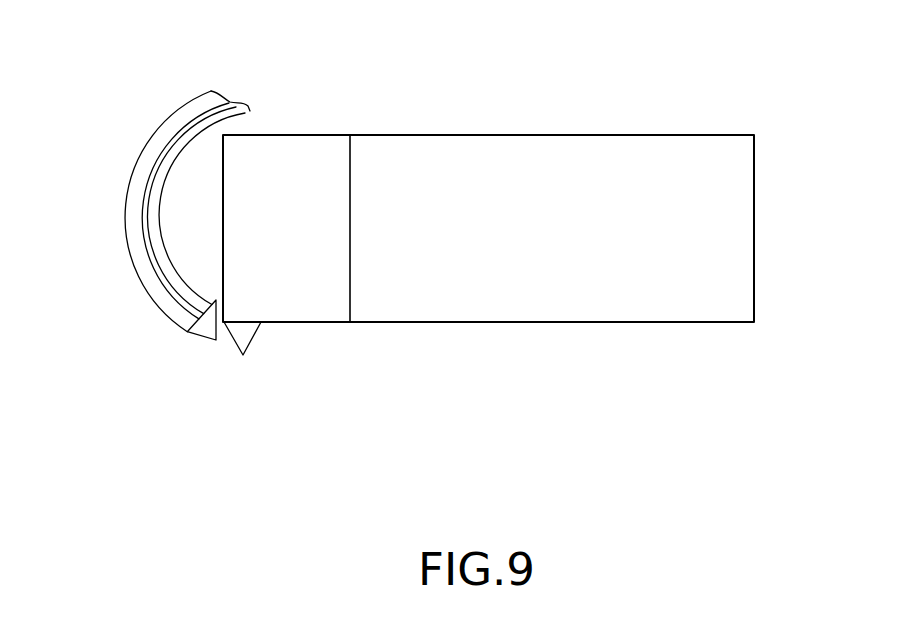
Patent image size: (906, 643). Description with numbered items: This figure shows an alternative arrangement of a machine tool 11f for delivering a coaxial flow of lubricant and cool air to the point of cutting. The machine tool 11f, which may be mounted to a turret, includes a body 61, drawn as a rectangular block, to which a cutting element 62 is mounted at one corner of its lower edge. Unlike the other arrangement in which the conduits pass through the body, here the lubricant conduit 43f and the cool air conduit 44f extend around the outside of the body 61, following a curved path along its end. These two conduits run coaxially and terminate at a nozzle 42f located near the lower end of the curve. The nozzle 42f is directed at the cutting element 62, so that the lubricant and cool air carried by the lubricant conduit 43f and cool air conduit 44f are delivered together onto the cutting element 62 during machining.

The machine tool 11f is at (487, 128).
The body 61 is at (639, 135).
The cutting element 62 is at (252, 335).
The nozzle 42f is at (199, 345).
The lubricant conduit 43f is at (140, 215).
The cool air conduit 44f is at (142, 152).